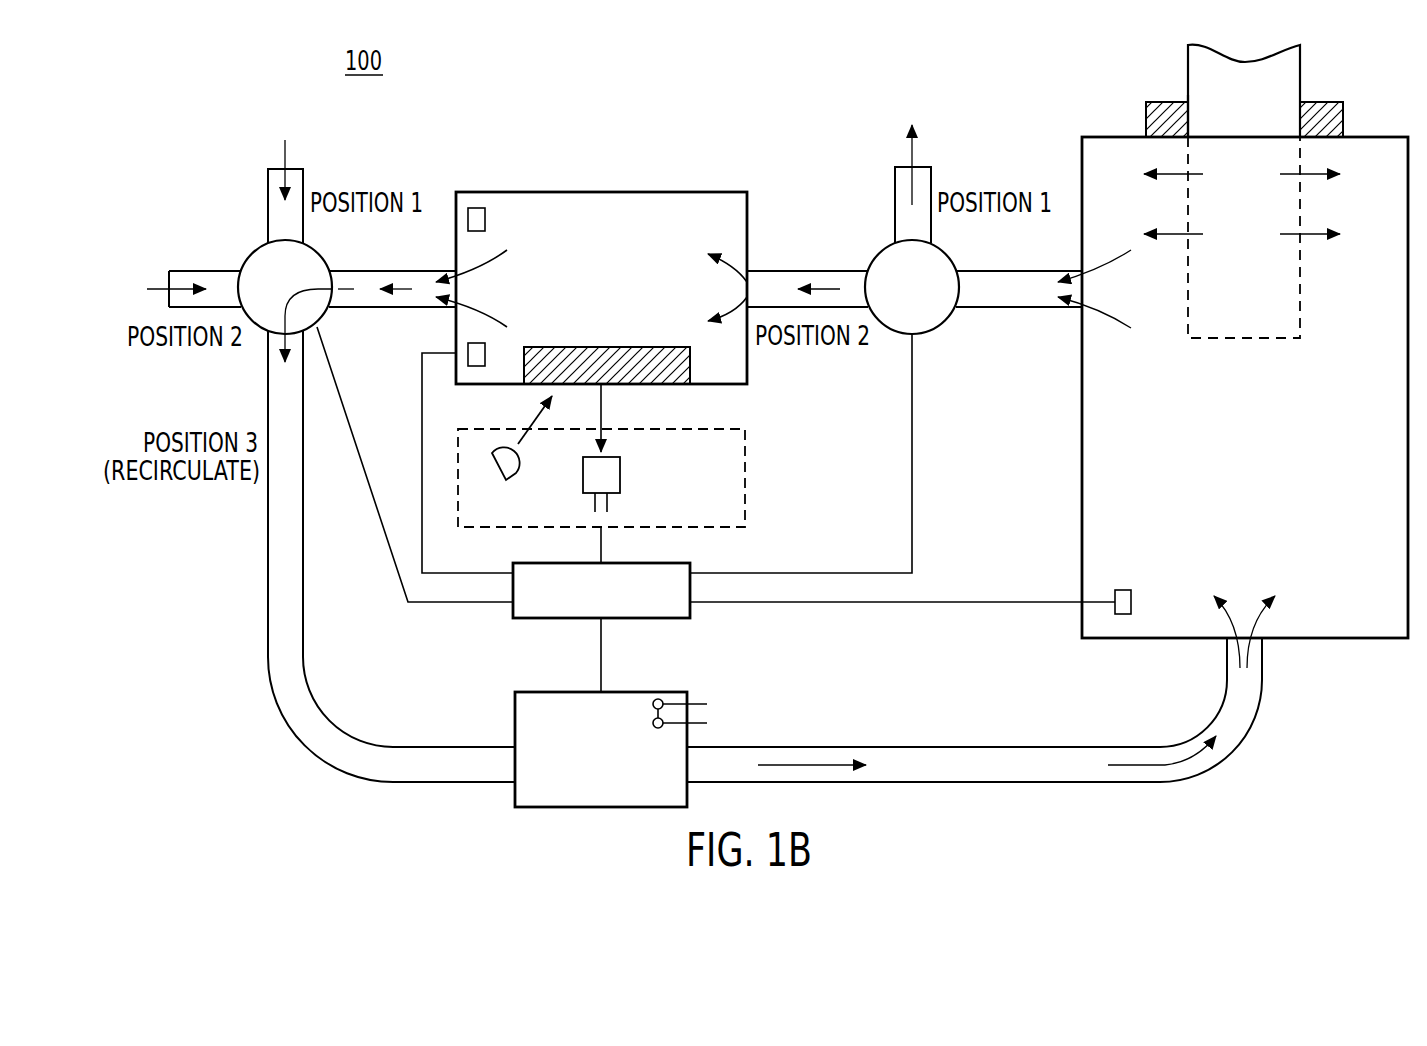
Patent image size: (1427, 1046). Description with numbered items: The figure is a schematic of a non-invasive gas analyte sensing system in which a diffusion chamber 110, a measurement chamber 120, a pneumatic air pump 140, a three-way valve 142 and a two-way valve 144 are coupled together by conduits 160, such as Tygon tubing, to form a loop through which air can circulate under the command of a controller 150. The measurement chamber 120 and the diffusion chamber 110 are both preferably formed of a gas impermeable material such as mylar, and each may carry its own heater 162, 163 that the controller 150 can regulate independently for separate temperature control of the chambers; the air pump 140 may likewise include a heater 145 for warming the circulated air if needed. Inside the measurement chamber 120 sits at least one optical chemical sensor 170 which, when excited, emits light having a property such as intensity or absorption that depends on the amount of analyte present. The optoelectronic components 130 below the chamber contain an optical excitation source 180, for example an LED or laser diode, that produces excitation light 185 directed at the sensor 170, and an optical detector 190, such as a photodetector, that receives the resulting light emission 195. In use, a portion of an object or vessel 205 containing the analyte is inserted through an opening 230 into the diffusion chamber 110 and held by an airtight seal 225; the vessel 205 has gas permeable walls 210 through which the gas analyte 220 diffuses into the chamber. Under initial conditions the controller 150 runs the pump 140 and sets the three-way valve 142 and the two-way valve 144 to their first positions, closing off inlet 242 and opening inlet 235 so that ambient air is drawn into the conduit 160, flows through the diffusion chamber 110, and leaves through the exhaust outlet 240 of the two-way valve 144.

The diffusion chamber 110 is at (1364, 640).
The measurement chamber 120 is at (711, 190).
The optoelectronic components 130 is at (746, 485).
The pneumatic pump 140 is at (513, 718).
The three-way valve 142 is at (263, 262).
The two-way valve 144 is at (930, 318).
The heater 145 is at (648, 712).
The controller 150 is at (692, 618).
The conduits 160 is at (408, 783).
The heater 162 is at (485, 357).
The heater 163 is at (1122, 590).
The optical chemical sensor 170 is at (626, 356).
The optical excitation source 180 is at (518, 468).
The excitation light 185 is at (545, 406).
The optical detector 190 is at (620, 480).
The light emission 195 is at (602, 404).
The object 205 is at (1304, 76).
The gas permeable walls 210 is at (1300, 338).
The gas analyte 220 is at (1175, 232).
The airtight seal 225 is at (1145, 116).
The opening 230 is at (1178, 90).
The inlet 235 is at (266, 182).
The exhaust outlet 240 is at (880, 252).
The inlet 242 is at (176, 268).